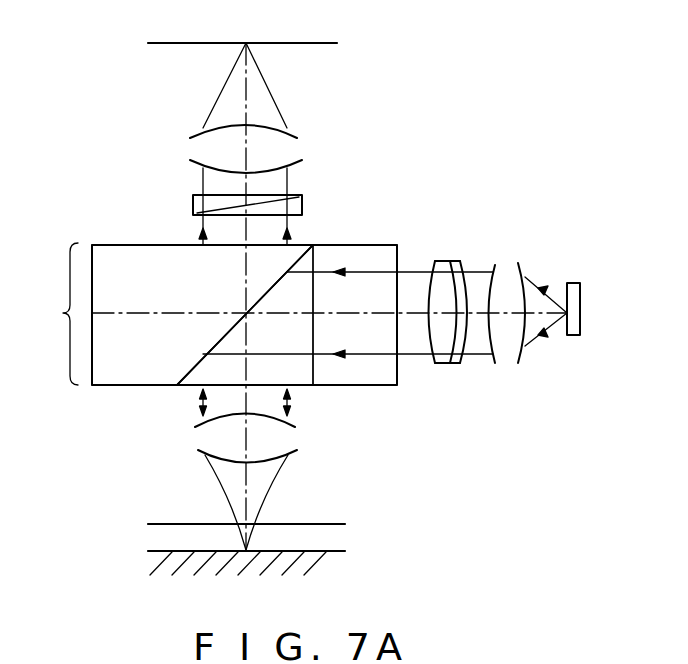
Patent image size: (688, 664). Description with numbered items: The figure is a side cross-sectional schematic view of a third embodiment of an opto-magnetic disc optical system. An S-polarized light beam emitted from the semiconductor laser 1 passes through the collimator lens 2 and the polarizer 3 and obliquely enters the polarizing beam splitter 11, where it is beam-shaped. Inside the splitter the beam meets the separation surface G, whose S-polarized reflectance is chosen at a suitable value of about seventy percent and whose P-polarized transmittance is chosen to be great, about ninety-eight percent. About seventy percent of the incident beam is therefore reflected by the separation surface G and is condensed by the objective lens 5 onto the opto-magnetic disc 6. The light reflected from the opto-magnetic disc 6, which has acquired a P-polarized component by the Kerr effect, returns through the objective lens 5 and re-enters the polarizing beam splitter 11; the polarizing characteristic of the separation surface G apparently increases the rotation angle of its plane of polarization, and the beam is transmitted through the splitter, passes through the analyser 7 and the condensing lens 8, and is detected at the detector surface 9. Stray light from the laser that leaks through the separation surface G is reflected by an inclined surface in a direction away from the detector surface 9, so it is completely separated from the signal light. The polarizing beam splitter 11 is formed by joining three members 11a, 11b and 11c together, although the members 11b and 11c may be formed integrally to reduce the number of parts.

The semiconductor laser 1 is at (575, 280).
The collimator lens 2 is at (507, 277).
The polarizer 3 is at (447, 261).
The objective lens 5 is at (285, 438).
The opto-magnetic disc 6 is at (333, 539).
The analyser 7 is at (303, 197).
The condensing lens 8 is at (295, 152).
The detector surface 9 is at (328, 40).
The polarizing beam splitter 11 is at (212, 314).
The member 11a is at (135, 265).
The member 11b is at (297, 377).
The member 11c is at (365, 372).
The separation surface G is at (300, 252).